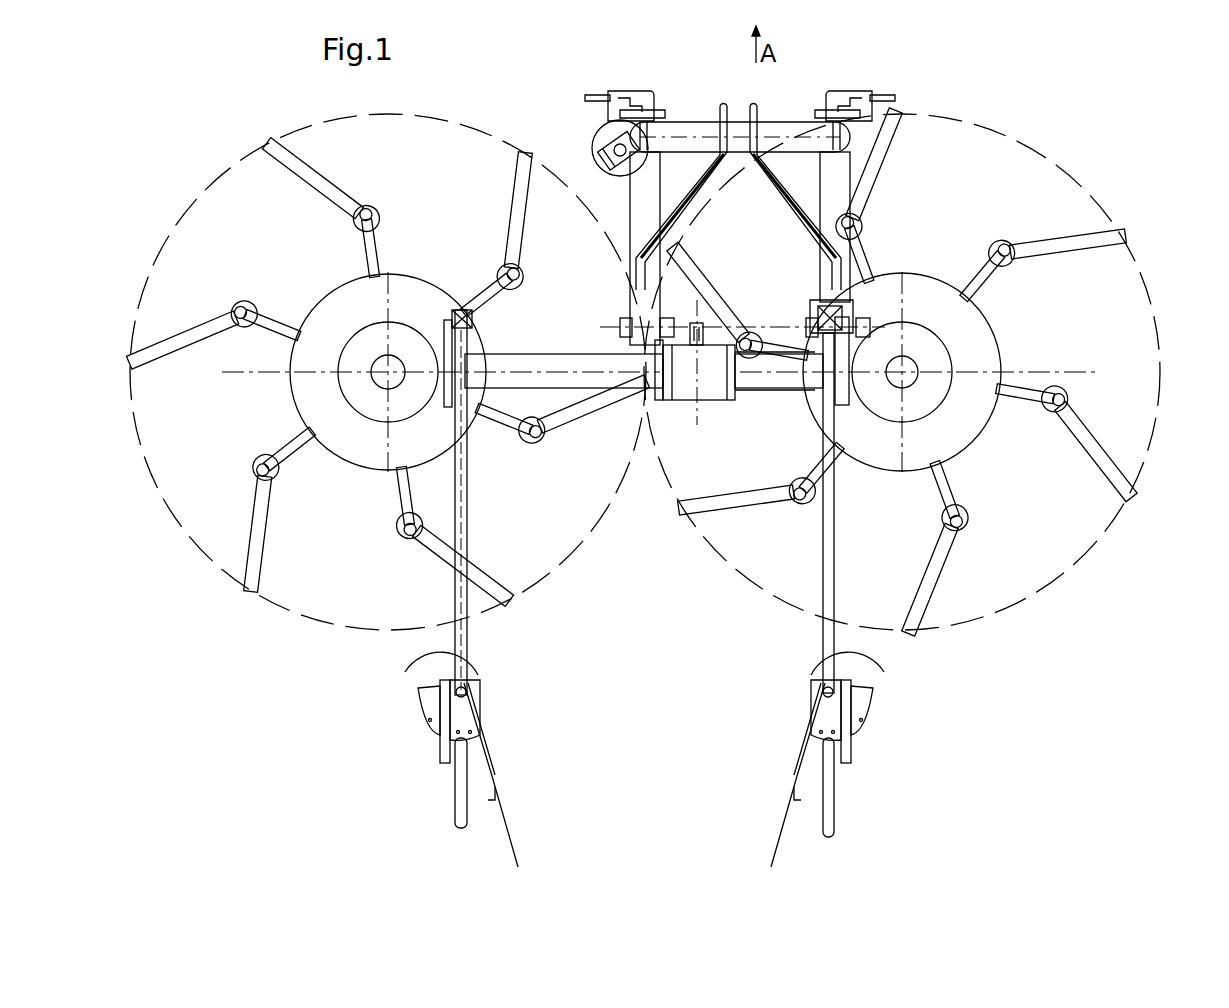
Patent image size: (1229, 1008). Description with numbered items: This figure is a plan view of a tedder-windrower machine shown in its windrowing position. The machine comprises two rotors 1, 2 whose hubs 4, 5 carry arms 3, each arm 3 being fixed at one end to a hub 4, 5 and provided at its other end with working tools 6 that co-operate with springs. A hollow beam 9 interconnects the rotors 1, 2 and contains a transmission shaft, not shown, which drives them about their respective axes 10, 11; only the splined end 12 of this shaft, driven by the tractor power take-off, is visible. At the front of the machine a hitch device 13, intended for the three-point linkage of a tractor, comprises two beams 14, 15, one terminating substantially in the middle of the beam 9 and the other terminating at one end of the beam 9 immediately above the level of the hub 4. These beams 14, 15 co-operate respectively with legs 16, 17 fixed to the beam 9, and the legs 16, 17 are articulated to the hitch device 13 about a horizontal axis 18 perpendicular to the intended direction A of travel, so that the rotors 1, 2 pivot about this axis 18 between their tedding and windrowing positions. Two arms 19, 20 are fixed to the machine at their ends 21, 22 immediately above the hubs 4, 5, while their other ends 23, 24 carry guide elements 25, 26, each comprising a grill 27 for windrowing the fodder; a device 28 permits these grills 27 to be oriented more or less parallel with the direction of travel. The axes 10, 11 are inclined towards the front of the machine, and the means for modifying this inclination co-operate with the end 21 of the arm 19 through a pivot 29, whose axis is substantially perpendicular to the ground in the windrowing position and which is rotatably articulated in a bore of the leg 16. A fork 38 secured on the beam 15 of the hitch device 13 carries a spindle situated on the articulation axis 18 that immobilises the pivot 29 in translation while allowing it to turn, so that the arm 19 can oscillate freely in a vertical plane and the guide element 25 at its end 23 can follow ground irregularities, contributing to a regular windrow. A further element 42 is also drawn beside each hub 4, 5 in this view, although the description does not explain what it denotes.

The rotor 1 is at (958, 452).
The rotor 2 is at (290, 396).
The arms 3 is at (358, 252).
The hub 4 is at (982, 325).
The hub 5 is at (332, 310).
The working tools 6 is at (336, 190).
The hollow beam 9 is at (538, 362).
The axis 10 is at (905, 370).
The axis 11 is at (386, 370).
The splined end 12 is at (694, 322).
The hitch device 13 is at (684, 118).
The beam 14 is at (640, 205).
The beam 15 is at (825, 206).
The leg 16 is at (850, 350).
The leg 17 is at (660, 378).
The horizontal axis 18 is at (765, 322).
The arm 19 is at (824, 556).
The arm 20 is at (470, 512).
The end 21 is at (820, 378).
The end 22 is at (468, 350).
The end 23 is at (832, 650).
The end 24 is at (466, 626).
The guide element 25 is at (806, 740).
The guide element 26 is at (492, 742).
The grill 27 is at (510, 846).
The device 28 is at (428, 706).
The pivot 29 is at (454, 312).
The fork 38 is at (816, 302).
The bracket plate 42 is at (448, 408).